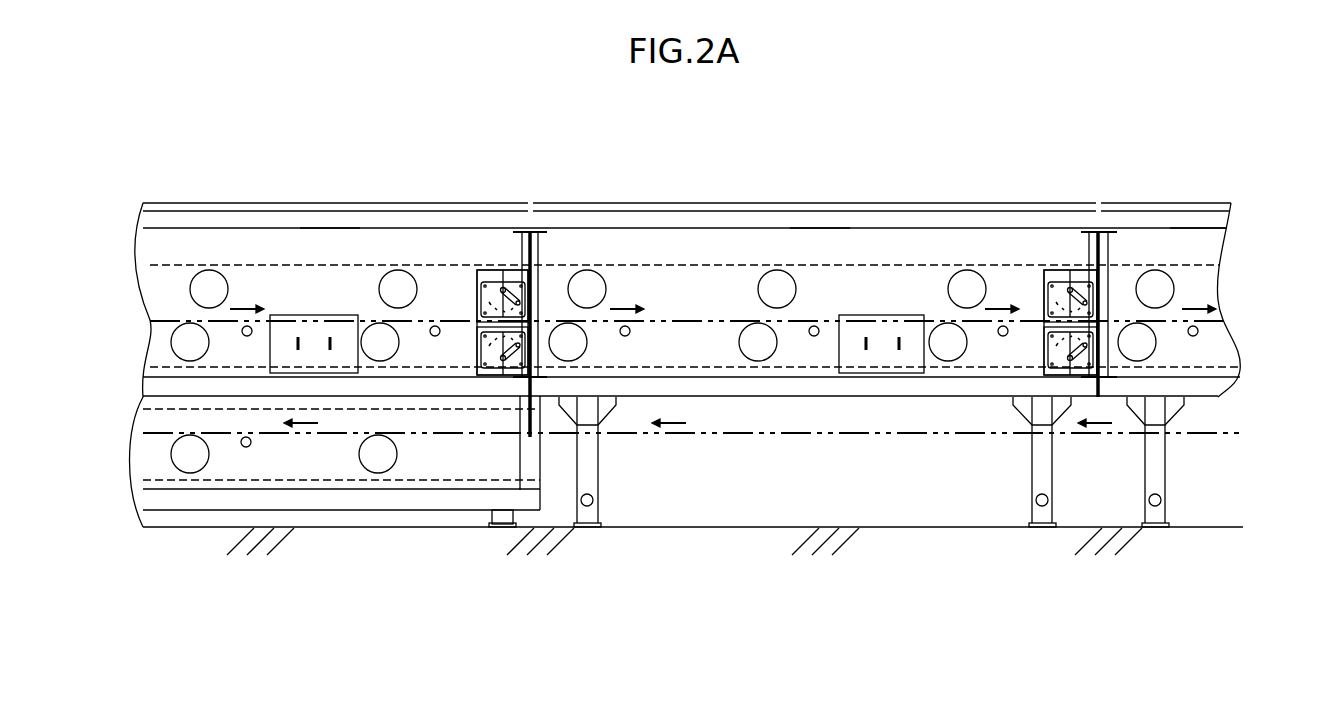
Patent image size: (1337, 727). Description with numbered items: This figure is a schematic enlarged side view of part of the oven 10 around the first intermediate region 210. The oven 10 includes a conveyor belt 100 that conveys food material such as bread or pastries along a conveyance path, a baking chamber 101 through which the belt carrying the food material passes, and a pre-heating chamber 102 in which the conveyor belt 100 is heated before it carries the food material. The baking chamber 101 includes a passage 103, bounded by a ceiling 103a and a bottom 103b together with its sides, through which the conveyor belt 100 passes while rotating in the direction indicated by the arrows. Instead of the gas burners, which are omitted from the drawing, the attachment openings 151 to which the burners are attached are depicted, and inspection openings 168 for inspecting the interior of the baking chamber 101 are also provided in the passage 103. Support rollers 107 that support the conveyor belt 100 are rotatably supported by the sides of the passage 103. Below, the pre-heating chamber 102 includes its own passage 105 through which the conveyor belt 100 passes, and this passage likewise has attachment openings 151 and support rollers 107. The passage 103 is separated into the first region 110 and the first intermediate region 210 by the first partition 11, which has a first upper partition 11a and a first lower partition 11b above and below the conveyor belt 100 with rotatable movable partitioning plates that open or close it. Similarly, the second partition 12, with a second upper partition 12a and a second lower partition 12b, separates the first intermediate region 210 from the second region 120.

The oven 10 is at (124, 150).
The conveyor belt 100 is at (1227, 435).
The baking chamber 101 is at (205, 203).
The pre-heating chamber 102 is at (207, 530).
The passage 103 is at (250, 256).
The ceiling 103a is at (161, 268).
The bottom 103b is at (162, 368).
The passage 105 is at (320, 480).
The support rollers 107 is at (242, 334).
The first region 110 is at (332, 283).
The second region 120 is at (1198, 283).
The first intermediate region 210 is at (825, 285).
The first partition 11 is at (513, 162).
The first upper partition 11a is at (497, 268).
The first lower partition 11b is at (476, 338).
The second partition 12 is at (1082, 162).
The second upper partition 12a is at (1063, 268).
The second lower partition 12b is at (1043, 338).
The attachment openings 151 is at (175, 324).
The inspection openings 168 is at (305, 315).